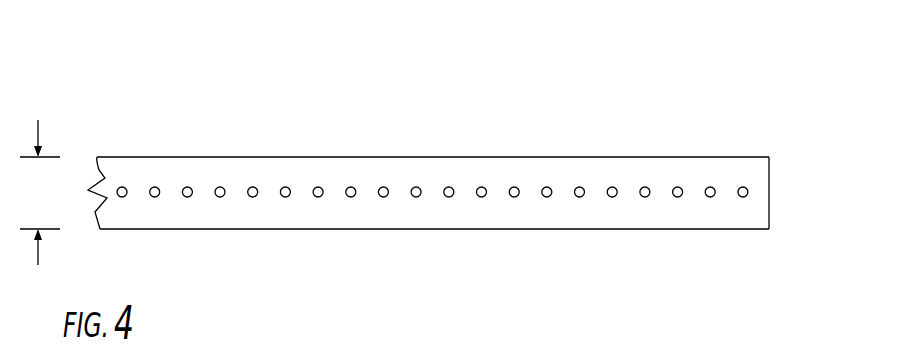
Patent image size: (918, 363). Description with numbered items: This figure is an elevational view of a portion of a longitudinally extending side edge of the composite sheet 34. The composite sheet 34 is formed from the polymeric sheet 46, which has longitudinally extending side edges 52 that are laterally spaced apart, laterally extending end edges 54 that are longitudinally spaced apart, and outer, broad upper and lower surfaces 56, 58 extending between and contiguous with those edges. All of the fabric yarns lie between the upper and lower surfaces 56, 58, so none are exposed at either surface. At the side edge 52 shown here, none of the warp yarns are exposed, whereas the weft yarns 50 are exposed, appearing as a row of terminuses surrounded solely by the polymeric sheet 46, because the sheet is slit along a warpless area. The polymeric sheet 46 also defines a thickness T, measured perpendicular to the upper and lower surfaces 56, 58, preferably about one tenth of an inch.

The composite sheet 34 is at (772, 94).
The polymeric sheet 46 is at (92, 168).
The weft yarns 50 is at (285, 187).
The side edges 52 is at (439, 170).
The end edges 54 is at (769, 195).
The upper surface 56 is at (312, 157).
The lower surface 58 is at (408, 229).